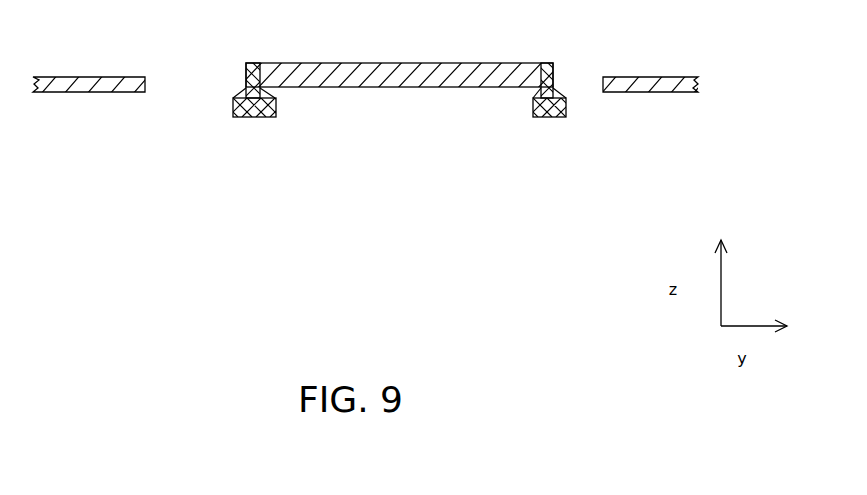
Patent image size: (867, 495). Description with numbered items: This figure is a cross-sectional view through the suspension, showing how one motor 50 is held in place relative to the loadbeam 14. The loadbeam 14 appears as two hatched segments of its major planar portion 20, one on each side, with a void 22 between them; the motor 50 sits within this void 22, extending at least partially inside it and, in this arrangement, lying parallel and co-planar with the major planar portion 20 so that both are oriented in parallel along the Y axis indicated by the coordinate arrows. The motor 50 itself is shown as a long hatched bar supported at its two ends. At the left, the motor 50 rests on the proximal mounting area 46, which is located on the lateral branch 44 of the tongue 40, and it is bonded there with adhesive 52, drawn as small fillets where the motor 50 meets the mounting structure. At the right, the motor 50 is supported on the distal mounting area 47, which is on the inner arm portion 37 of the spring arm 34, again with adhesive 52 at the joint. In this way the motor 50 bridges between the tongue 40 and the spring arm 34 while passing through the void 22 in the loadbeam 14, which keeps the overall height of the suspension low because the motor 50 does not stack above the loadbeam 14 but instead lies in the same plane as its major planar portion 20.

The loadbeam 14 is at (93, 87).
The major planar portion 20 is at (113, 77).
The void 22 is at (170, 104).
The spring arm 34 is at (547, 117).
The inner arm portion 37 is at (565, 97).
The tongue 40 is at (255, 117).
The lateral branch 44 is at (233, 102).
The proximal mounting area 46 is at (247, 63).
The distal mounting area 47 is at (549, 63).
The motor 50 is at (460, 63).
The adhesive 52 is at (262, 88).